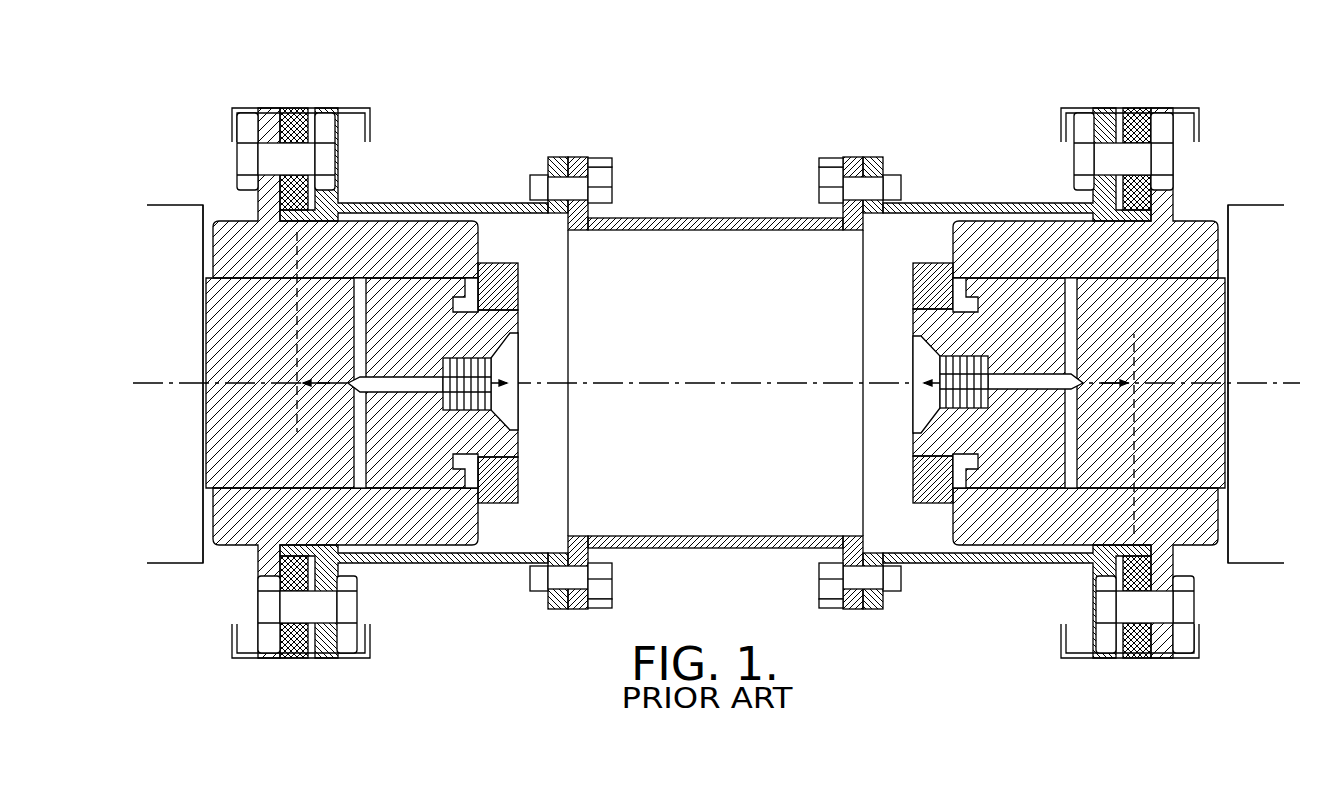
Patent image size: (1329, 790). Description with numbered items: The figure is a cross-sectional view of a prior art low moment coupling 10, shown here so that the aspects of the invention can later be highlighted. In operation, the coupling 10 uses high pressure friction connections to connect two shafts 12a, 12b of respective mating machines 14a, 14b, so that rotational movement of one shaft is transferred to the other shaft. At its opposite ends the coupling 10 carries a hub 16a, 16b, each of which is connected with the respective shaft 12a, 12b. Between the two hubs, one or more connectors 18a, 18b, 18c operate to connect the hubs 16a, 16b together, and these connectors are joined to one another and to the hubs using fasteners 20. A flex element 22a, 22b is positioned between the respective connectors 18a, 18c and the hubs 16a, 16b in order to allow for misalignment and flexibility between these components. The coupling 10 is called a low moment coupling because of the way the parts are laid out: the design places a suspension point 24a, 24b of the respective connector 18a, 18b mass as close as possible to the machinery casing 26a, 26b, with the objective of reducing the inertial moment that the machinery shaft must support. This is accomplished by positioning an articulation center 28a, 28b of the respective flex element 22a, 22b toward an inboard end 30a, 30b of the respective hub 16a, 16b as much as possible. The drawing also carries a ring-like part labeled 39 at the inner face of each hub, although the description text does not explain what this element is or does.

The low moment coupling 10 is at (437, 80).
The shaft 12a is at (1101, 383).
The shaft 12b is at (317, 381).
The mating machine 14a is at (1245, 205).
The mating machine 14b is at (202, 204).
The hub 16a is at (1190, 220).
The hub 16b is at (237, 222).
The connector 18a is at (975, 204).
The connector 18b is at (452, 204).
The connector 18c is at (700, 218).
The fastener 20 is at (337, 160).
The flex element 22a is at (1135, 120).
The flex element 22b is at (296, 125).
The suspension point 24a is at (1120, 108).
The suspension point 24b is at (299, 108).
The machinery casing 26a is at (1102, 406).
The machinery casing 26b is at (317, 360).
The articulation center 28a is at (916, 383).
The articulation center 28b is at (478, 397).
The inboard end 30a is at (1228, 462).
The inboard end 30b is at (203, 452).
The ring 39 is at (520, 270).